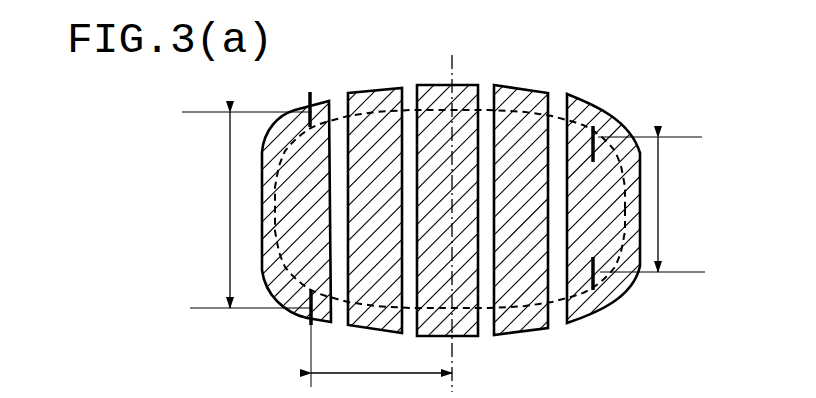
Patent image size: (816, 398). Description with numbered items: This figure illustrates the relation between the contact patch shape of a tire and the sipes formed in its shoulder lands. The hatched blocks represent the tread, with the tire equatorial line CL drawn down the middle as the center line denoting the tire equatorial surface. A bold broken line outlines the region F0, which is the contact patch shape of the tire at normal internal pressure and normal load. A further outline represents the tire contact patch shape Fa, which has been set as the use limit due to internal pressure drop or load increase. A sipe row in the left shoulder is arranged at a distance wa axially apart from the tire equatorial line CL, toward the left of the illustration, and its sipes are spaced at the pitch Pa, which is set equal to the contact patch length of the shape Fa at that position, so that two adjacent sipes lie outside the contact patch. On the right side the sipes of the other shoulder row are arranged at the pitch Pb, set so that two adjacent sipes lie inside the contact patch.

The tire contact patch shape Fa is at (512, 92).
The contact patch shape region F0 is at (550, 93).
The tire equatorial line CL is at (451, 208).
The pitch of sipe row Pa is at (247, 210).
The pitch of sipe row Pb is at (651, 204).
The distance from tire equatorial line wa is at (381, 356).